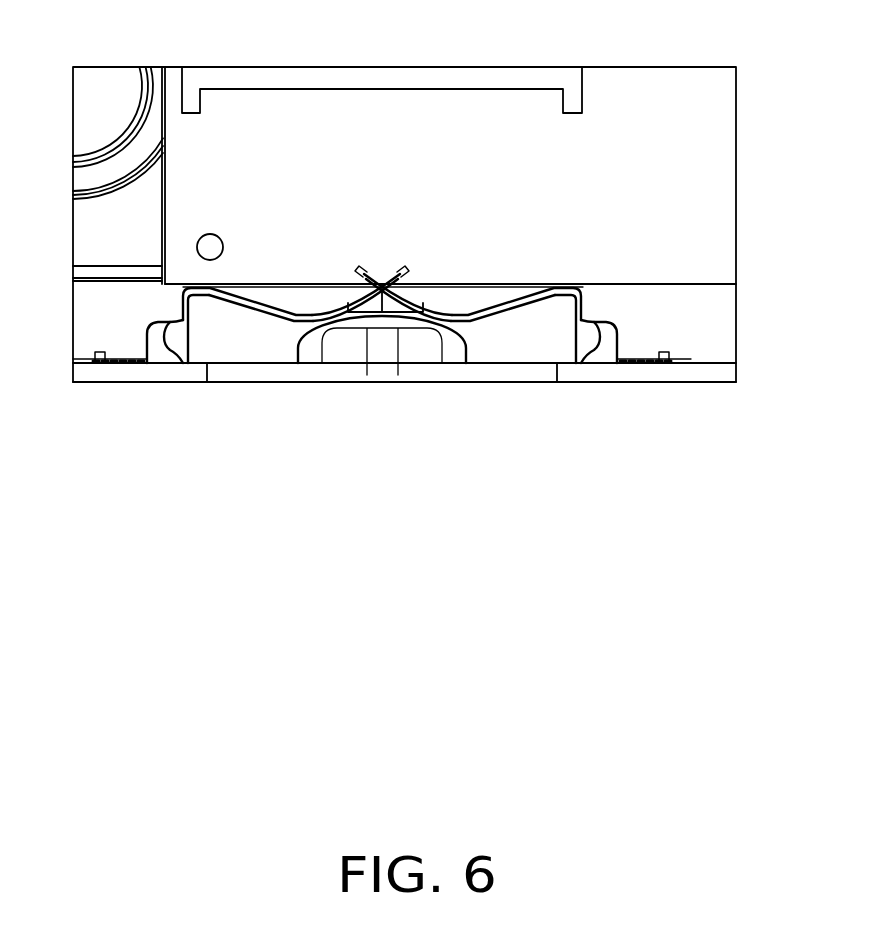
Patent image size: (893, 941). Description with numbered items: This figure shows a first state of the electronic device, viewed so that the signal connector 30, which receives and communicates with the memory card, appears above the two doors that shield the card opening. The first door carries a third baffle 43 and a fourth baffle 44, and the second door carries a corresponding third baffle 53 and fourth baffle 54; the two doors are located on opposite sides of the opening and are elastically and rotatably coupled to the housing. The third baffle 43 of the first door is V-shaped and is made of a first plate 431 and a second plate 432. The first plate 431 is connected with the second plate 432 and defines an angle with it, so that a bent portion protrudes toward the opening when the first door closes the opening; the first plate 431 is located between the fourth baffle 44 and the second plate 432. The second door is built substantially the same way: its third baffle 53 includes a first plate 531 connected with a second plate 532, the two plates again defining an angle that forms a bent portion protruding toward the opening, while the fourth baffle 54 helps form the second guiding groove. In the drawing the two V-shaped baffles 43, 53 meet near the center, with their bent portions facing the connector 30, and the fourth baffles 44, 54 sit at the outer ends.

The signal connector 30 is at (487, 77).
The third baffle 43 is at (239, 377).
The first plate 431 is at (258, 305).
The second plate 432 is at (343, 303).
The fourth baffle 44 is at (187, 308).
The third baffle 53 is at (535, 379).
The first plate 531 is at (525, 305).
The second plate 532 is at (425, 303).
The fourth baffle 54 is at (583, 307).